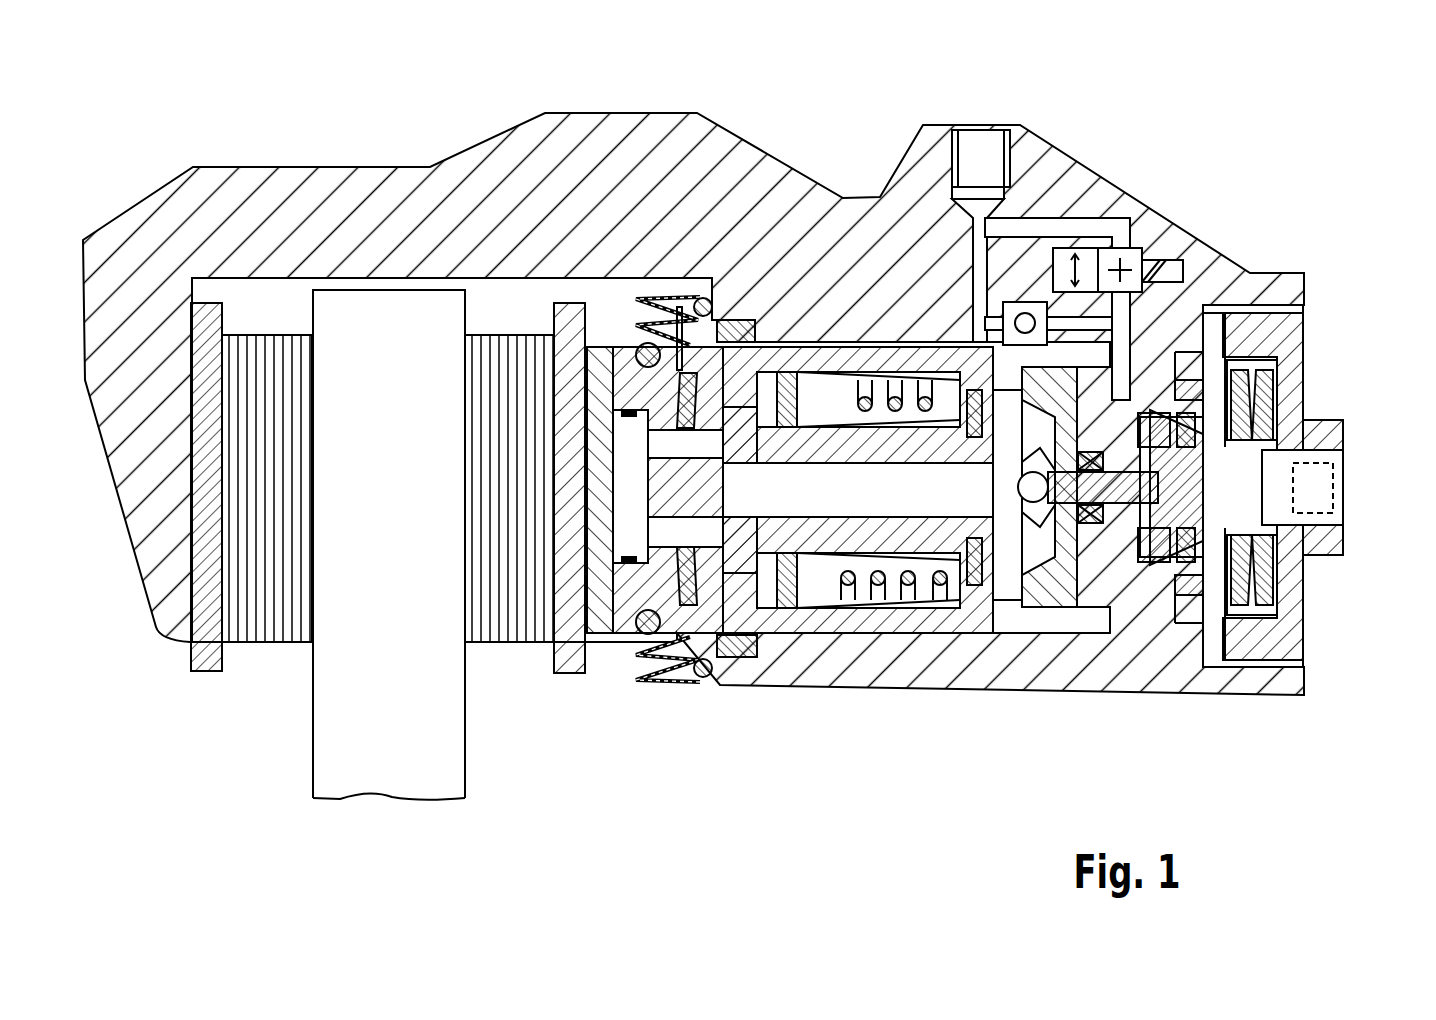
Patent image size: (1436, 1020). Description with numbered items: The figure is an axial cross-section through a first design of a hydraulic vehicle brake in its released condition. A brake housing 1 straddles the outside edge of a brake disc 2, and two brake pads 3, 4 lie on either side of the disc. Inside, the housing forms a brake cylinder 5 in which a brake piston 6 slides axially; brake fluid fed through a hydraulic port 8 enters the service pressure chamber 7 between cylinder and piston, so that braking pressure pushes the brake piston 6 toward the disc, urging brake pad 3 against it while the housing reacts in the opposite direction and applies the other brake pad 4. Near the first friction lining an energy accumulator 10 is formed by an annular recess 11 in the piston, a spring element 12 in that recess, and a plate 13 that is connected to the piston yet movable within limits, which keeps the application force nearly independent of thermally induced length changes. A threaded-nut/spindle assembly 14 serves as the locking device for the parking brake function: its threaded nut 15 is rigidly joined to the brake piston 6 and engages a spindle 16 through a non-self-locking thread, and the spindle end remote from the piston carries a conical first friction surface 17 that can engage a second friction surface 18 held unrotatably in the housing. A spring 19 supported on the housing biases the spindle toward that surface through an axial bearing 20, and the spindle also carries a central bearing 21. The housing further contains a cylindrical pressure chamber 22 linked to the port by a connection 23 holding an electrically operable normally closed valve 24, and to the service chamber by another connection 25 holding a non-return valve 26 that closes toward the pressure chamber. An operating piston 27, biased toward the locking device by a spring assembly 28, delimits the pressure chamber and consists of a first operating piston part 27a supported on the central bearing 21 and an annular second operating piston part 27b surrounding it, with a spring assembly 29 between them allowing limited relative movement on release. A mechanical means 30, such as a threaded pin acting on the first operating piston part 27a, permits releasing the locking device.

The brake housing 1 is at (805, 165).
The brake disc 2 is at (389, 778).
The brake pad 3 is at (510, 627).
The brake pad 4 is at (265, 627).
The brake cylinder 5 is at (983, 670).
The brake piston 6 is at (765, 608).
The service pressure chamber 7 is at (810, 575).
The hydraulic port 8 is at (1000, 195).
The energy accumulator 10 is at (697, 367).
The annular recess 11 is at (722, 600).
The spring element 12 is at (732, 367).
The plate 13 is at (617, 600).
The threaded-nut/spindle assembly 14 is at (955, 545).
The threaded nut 15 is at (865, 545).
The spindle 16 is at (830, 517).
The first friction surface 17 is at (1060, 503).
The second friction surface 18 is at (1048, 500).
The spring 19 is at (915, 545).
The axial bearing 20 is at (990, 600).
The central bearing 21 is at (1140, 562).
The cylindrical pressure chamber 22 is at (1180, 562).
The connection 23 is at (1078, 228).
The normally closed valve 24 is at (1130, 258).
The connection 25 is at (1103, 326).
The non-return valve 26 is at (1030, 320).
The operating piston 27 is at (1205, 541).
The first operating piston part 27a is at (1210, 427).
The second operating piston part 27b is at (1190, 595).
The spring assembly 28 is at (1269, 590).
The spring assembly 29 is at (1277, 387).
The mechanical means 30 is at (1318, 486).